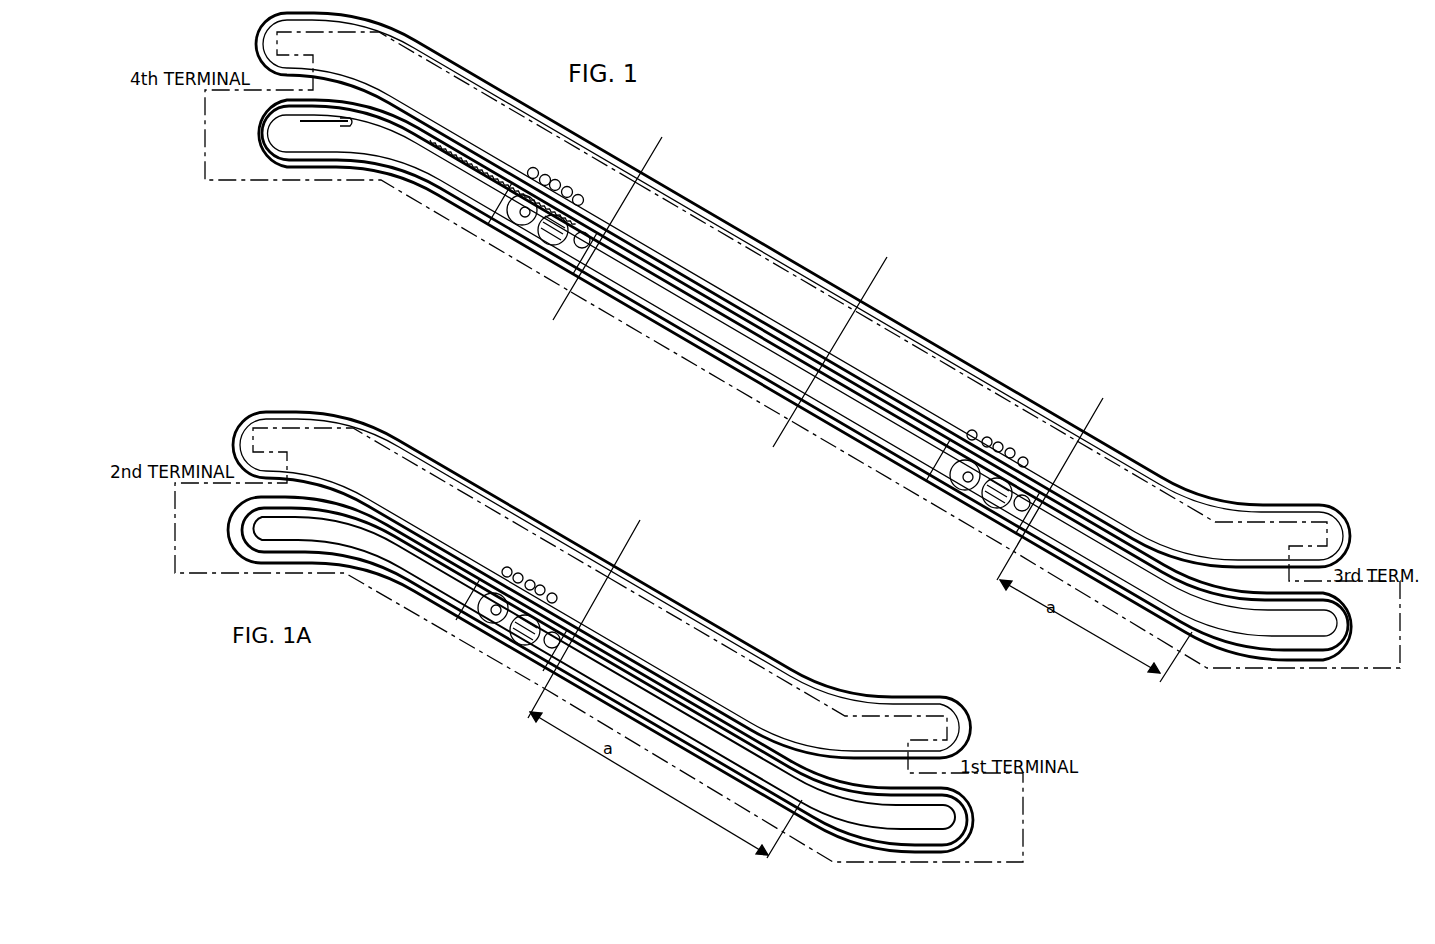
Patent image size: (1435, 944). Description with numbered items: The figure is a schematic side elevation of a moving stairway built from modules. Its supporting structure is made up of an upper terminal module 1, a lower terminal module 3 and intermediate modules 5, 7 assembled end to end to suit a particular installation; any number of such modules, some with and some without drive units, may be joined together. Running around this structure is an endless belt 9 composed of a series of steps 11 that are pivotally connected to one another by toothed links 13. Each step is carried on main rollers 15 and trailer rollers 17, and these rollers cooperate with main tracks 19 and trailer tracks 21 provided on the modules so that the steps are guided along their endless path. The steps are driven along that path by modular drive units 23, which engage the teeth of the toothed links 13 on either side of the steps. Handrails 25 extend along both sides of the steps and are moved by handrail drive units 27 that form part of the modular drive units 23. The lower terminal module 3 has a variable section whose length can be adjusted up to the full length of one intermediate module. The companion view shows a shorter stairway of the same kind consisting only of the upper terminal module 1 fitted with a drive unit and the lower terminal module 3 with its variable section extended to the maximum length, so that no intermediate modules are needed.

In FIG. 1, the upper terminal module 1 is at (437, 241).
In FIG. 1A, the upper terminal module 1 is at (387, 649).
In FIG. 1, the lower terminal module 3 is at (1306, 670).
In FIG. 1A, the lower terminal module 3 is at (547, 768).
In FIG. 1, the intermediate module 5 is at (665, 346).
In FIG. 1, the intermediate module 7 is at (898, 487).
In FIG. 1, the endless belt 9 is at (390, 152).
In FIG. 1, the steps 11 is at (418, 122).
In FIG. 1, the toothed links 13 is at (437, 146).
In FIG. 1, the main rollers 15 is at (352, 104).
In FIG. 1, the trailer rollers 17 is at (351, 125).
In FIG. 1, the main tracks 19 is at (406, 186).
In FIG. 1A, the main tracks 19 is at (303, 566).
In FIG. 1, the trailer tracks 21 is at (342, 123).
In FIG. 1A, the trailer tracks 21 is at (316, 537).
In FIG. 1, the modular drive units 23 is at (522, 243).
In FIG. 1A, the modular drive units 23 is at (505, 650).
In FIG. 1, the handrails 25 is at (499, 90).
In FIG. 1A, the handrails 25 is at (458, 480).
In FIG. 1, the handrail drive units 27 is at (540, 172).
In FIG. 1A, the handrail drive units 27 is at (533, 586).